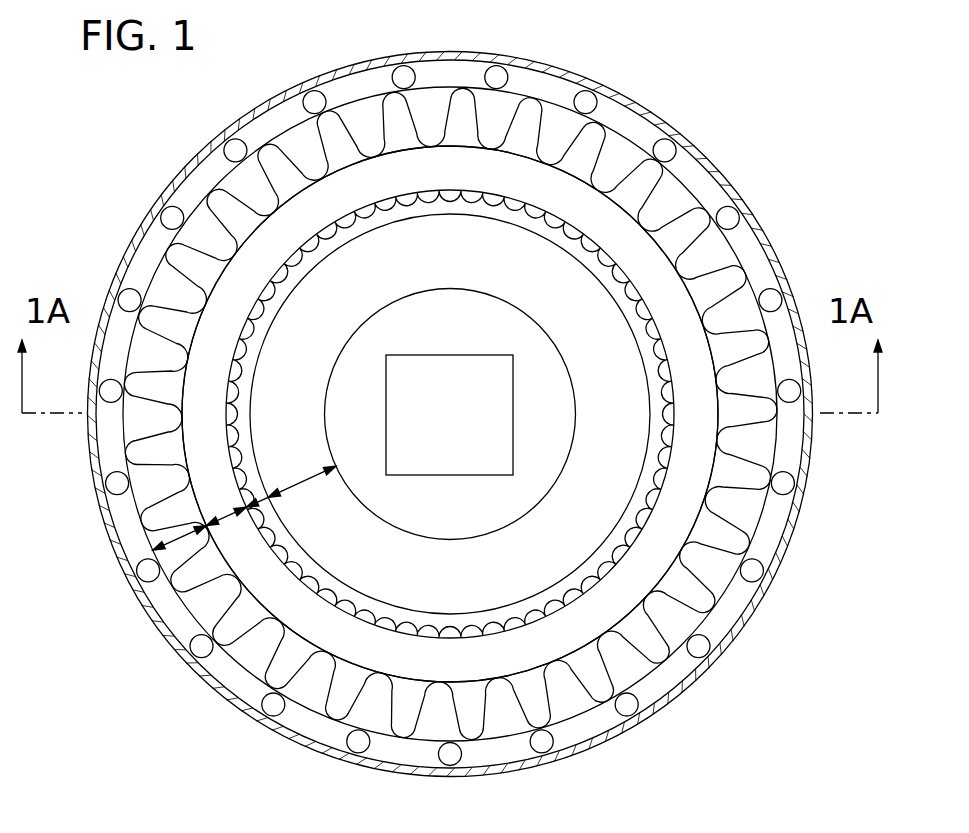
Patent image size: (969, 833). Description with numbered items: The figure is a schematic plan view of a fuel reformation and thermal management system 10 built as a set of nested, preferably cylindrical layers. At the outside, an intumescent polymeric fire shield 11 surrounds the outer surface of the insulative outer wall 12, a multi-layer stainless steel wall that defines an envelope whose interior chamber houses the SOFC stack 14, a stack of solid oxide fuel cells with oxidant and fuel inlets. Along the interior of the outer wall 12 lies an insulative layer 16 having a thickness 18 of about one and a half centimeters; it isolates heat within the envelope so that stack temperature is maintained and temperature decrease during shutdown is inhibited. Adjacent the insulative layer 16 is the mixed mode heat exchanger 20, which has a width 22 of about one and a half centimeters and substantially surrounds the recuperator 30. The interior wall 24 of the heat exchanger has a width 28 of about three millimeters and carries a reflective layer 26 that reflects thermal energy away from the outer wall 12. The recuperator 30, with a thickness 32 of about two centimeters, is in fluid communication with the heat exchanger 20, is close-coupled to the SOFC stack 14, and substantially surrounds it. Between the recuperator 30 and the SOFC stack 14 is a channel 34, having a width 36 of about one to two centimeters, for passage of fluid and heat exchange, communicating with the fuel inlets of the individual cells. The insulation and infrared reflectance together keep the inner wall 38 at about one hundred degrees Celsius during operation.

The fuel reformation and thermal management system 10 is at (258, 116).
The intumescent polymeric fire shield 11 is at (192, 157).
The insulative outer wall 12 is at (356, 98).
The SOFC stack 14 is at (432, 431).
The insulative layer 16 is at (550, 123).
The thickness 18 is at (178, 542).
The mixed mode heat exchanger 20 is at (583, 205).
The width 22 is at (230, 515).
The interior wall 24 is at (608, 248).
The reflective layer 26 is at (670, 416).
The width 28 is at (260, 503).
The recuperator 30 is at (608, 475).
The thickness 32 is at (298, 488).
The channel 34 is at (535, 380).
The width 36 is at (227, 155).
The inner wall 38 is at (632, 608).